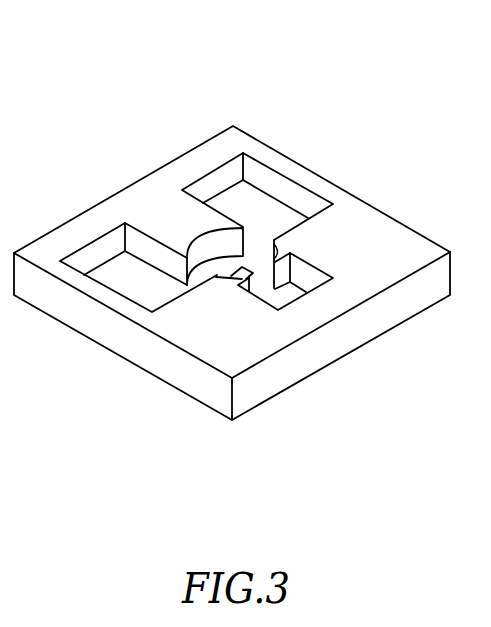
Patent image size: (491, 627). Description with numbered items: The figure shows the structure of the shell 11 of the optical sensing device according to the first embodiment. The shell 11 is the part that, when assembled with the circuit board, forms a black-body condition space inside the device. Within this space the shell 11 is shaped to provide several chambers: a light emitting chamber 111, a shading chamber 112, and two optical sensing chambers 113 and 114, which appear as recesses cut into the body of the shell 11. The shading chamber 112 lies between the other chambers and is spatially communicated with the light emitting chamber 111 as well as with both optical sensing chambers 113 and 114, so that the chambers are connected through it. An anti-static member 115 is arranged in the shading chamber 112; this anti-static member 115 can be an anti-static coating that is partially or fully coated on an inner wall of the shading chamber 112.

The shell 11 is at (390, 237).
The light emitting chamber 111 is at (288, 288).
The shading chamber 112 is at (240, 230).
The optical sensing chamber 113 is at (295, 200).
The optical sensing chamber 114 is at (133, 280).
The anti-static member 115 is at (253, 273).